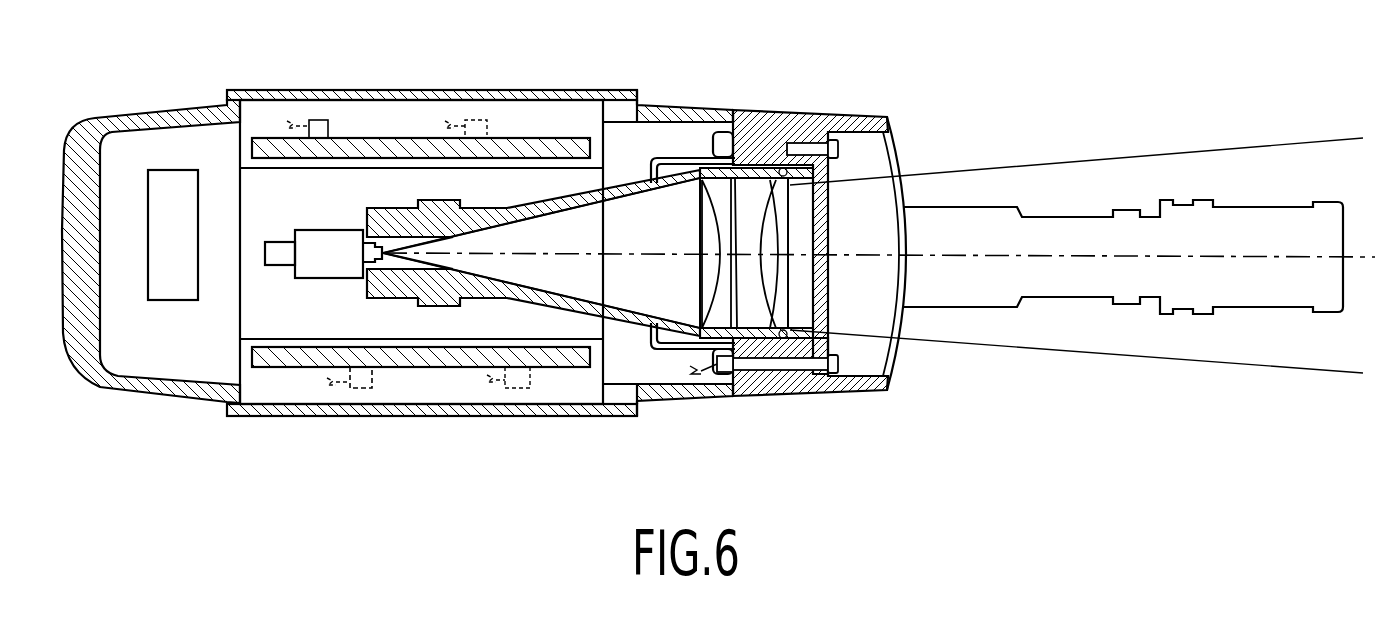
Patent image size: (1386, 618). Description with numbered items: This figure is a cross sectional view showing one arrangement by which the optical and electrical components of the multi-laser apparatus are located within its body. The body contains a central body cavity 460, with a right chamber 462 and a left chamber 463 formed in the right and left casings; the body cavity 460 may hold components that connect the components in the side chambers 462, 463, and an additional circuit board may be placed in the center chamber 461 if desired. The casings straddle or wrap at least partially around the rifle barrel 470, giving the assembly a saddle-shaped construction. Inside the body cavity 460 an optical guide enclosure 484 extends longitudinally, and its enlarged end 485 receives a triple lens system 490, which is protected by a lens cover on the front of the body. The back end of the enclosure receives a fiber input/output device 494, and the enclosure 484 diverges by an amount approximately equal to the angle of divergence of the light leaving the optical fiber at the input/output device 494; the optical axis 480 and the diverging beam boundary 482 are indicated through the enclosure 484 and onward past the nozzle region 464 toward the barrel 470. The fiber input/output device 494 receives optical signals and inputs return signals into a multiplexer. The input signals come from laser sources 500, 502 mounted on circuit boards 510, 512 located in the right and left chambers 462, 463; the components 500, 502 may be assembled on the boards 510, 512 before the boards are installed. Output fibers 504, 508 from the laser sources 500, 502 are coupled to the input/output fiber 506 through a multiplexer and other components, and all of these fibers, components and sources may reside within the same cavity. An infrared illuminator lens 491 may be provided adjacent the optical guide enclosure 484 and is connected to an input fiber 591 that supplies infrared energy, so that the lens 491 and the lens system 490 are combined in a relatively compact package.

The body cavity 460 is at (518, 334).
The center chamber 461 is at (170, 370).
The right chamber 462 is at (420, 405).
The left chamber 463 is at (585, 108).
The nozzle housing 464 is at (636, 336).
The rifle barrel 470 is at (1005, 293).
The optical axis / light path 480 is at (548, 256).
The light beam boundary 482 is at (1037, 178).
The optical guide enclosure 484 is at (480, 212).
The enlarged end 485 is at (772, 378).
The triple lens system 490 is at (700, 271).
The infrared illuminator lens 491 is at (825, 392).
The fiber input/output device 494 is at (345, 278).
The laser source 500 is at (318, 118).
The laser source 502 is at (360, 392).
The output fiber 504 is at (292, 117).
The input/output fiber 506 is at (252, 248).
The output fiber 508 is at (327, 392).
The circuit board 510 is at (372, 140).
The circuit board 512 is at (455, 365).
The input fiber 591 is at (690, 372).